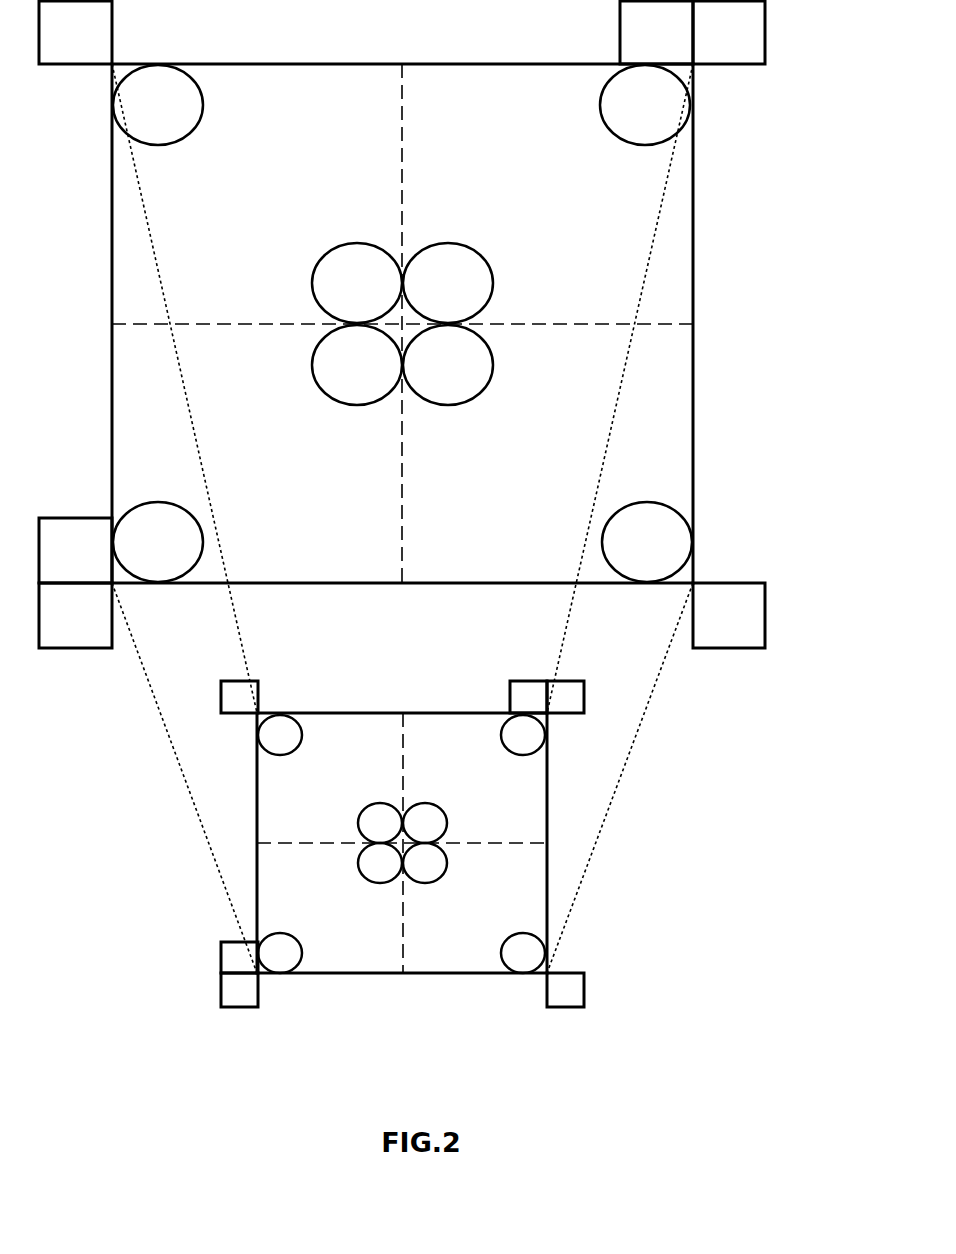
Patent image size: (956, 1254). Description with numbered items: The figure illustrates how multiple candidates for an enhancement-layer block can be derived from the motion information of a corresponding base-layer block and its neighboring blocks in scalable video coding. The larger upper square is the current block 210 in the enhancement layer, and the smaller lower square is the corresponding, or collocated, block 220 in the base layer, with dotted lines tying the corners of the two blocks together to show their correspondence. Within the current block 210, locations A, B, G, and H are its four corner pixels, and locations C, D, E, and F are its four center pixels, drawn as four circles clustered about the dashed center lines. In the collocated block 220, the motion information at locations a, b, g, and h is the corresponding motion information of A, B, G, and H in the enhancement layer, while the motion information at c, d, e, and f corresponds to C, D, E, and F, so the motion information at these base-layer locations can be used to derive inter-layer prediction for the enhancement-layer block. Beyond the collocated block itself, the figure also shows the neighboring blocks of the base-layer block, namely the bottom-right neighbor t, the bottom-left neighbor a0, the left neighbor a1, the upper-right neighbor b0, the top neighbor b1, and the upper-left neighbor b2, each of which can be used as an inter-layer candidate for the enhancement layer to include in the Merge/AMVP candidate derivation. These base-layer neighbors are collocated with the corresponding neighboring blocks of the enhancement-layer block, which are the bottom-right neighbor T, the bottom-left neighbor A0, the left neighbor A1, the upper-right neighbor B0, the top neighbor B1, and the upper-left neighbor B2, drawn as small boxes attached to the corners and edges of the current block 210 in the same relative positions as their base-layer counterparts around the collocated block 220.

The current block in the EL 210 is at (442, 324).
The corresponding block in the BL 220 is at (504, 855).
The upper-left neighboring EL block B2 is at (75, 32).
The top neighboring EL block B1 is at (656, 32).
The upper-right neighboring EL block B0 is at (729, 32).
The left neighboring EL block A1 is at (75, 550).
The bottom-left neighboring EL block A0 is at (75, 615).
The bottom-right neighboring EL block T is at (729, 615).
The corner pixel location of the current EL block A is at (158, 105).
The corner pixel location of the current EL block B is at (645, 105).
The center pixel location of the current EL block C is at (357, 283).
The center pixel location of the current EL block D is at (448, 283).
The center pixel location of the current EL block E is at (357, 365).
The center pixel location of the current EL block F is at (448, 365).
The corner pixel location of the current EL block G is at (158, 542).
The corner pixel location of the current EL block H is at (647, 542).
The upper-left neighboring BL block b2 is at (239, 697).
The top neighboring BL block b1 is at (528, 697).
The upper-right neighboring BL block b0 is at (565, 697).
The left neighboring BL block a1 is at (239, 957).
The bottom-left neighboring BL block a0 is at (239, 990).
The bottom-right neighboring BL block t is at (565, 990).
The motion information location in the collocated BL block a is at (280, 735).
The motion information location in the collocated BL block b is at (523, 735).
The motion information location in the collocated BL block c is at (380, 823).
The motion information location in the collocated BL block d is at (425, 823).
The motion information location in the collocated BL block e is at (380, 863).
The motion information location in the collocated BL block f is at (425, 863).
The motion information location in the collocated BL block g is at (280, 953).
The motion information location in the collocated BL block h is at (523, 953).